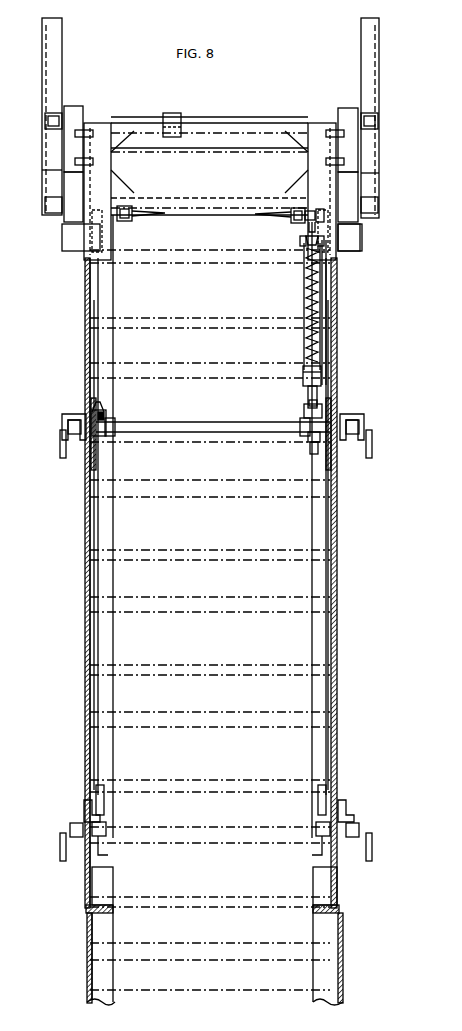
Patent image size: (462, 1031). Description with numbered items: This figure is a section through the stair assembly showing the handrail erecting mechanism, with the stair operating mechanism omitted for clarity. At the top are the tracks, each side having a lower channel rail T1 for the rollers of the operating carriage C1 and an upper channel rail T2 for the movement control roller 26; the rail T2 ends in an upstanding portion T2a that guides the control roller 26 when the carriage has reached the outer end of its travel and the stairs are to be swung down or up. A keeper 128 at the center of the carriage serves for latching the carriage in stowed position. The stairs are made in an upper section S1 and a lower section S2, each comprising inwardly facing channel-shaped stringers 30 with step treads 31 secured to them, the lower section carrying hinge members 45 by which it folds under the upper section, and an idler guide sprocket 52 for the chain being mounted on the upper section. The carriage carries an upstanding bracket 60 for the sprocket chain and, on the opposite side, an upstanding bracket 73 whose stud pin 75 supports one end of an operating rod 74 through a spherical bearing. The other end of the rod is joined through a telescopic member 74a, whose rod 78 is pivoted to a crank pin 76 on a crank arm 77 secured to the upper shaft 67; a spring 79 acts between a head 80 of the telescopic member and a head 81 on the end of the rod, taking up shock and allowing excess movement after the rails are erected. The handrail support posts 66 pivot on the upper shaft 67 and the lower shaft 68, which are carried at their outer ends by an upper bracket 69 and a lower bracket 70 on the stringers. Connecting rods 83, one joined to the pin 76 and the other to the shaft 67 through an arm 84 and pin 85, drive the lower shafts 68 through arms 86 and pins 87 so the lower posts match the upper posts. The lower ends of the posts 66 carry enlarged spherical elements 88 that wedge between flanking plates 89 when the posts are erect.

The upper channel rail T2 is at (44, 58).
The upstanding portion T2a is at (46, 114).
The movement control roller 26 is at (64, 120).
The operating carriage C1 is at (236, 126).
The keeper 128 is at (172, 116).
The upstanding bracket 60 is at (131, 222).
The upstanding bracket 73 is at (297, 224).
The stud pin 75 is at (322, 218).
The lower channel rail T1 is at (362, 228).
The operating rod 74 is at (304, 250).
The spring 79 is at (326, 281).
The telescopic member 74a is at (333, 305).
The head 80 is at (330, 242).
The head 81 is at (323, 376).
The rod 78 is at (320, 396).
The crank pin 76 is at (304, 410).
The crank arm 77 is at (318, 432).
The upper shaft 67 is at (231, 432).
The arm 84 is at (106, 420).
The pin 85 is at (103, 407).
The stringer 30 is at (86, 659).
The step tread 31 is at (224, 545).
The upper stair section S1 is at (340, 588).
The connecting rod 83 is at (99, 760).
The enlarged spherical element 88 is at (72, 414).
The support post 66 is at (74, 436).
The flanking plate 89 is at (60, 448).
The bracket 69 is at (92, 470).
The bracket 70 is at (88, 806).
The pin 87 is at (105, 812).
The arm 86 is at (106, 826).
The lower shaft 68 is at (104, 852).
The hinge member 45 is at (86, 925).
The lower idler guide sprocket 52 is at (344, 958).
The lower stair section S2 is at (86, 940).